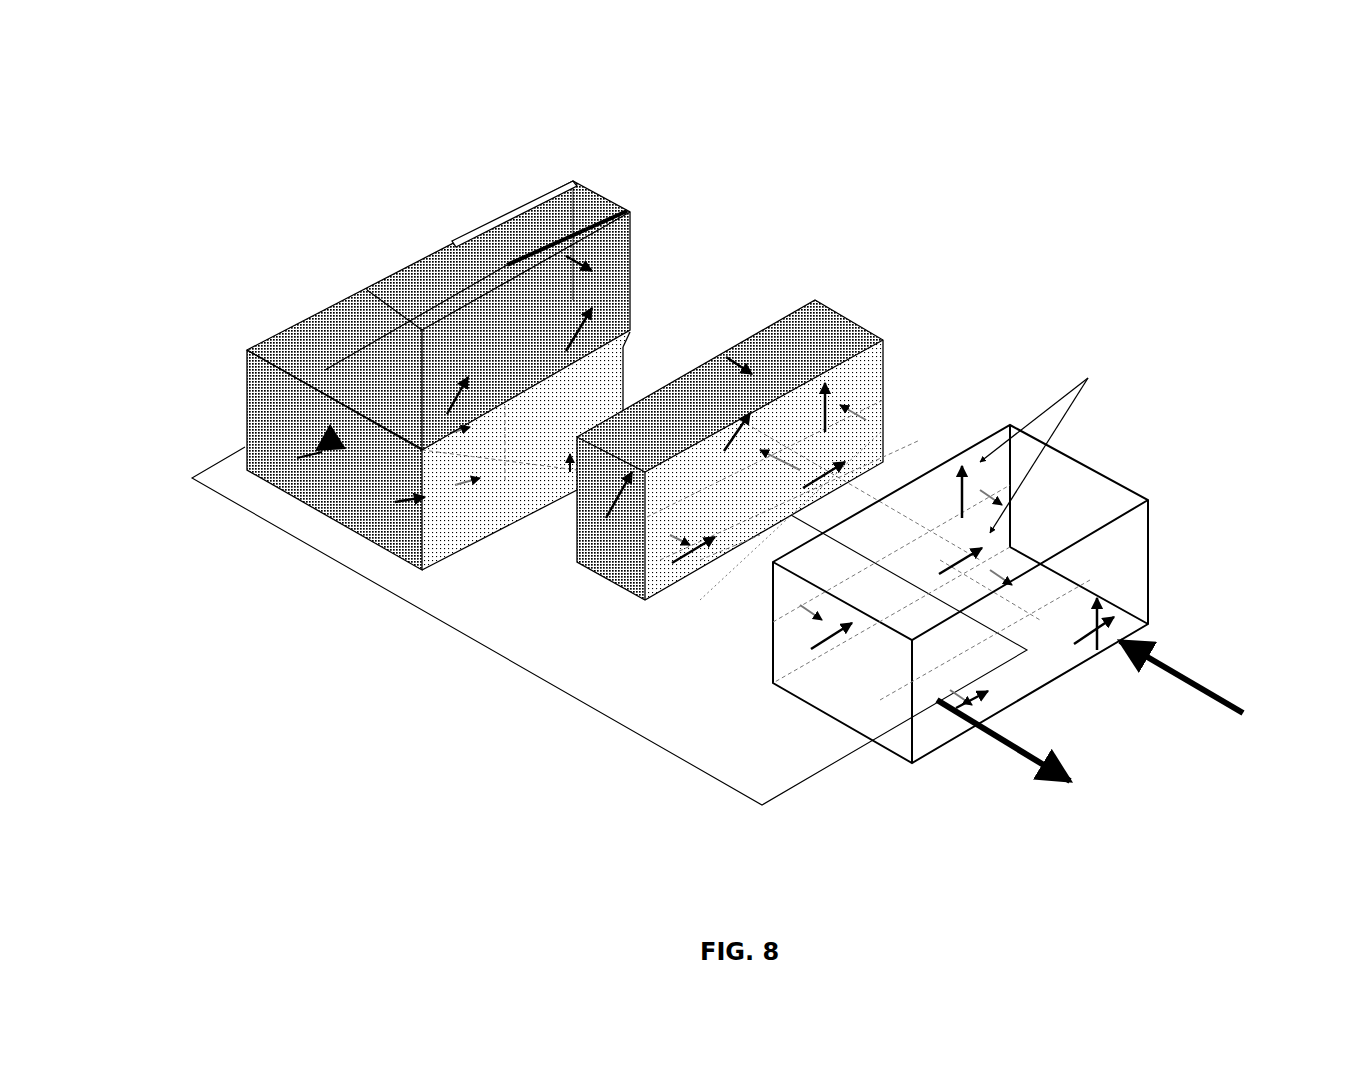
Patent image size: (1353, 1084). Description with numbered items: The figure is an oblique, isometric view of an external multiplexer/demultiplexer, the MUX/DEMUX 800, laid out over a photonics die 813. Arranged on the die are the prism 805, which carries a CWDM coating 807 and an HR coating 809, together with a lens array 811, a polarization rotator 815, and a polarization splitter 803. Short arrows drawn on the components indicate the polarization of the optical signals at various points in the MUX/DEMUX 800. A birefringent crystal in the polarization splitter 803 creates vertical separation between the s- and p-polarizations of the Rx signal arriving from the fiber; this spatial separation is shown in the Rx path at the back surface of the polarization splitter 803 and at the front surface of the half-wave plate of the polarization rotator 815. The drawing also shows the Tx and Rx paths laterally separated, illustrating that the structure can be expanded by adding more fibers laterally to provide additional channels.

The MUX/DEMUX 800 is at (192, 94).
The polarization splitter 803 is at (1127, 490).
The prism 805 is at (573, 178).
The CWDM coating 807 is at (598, 222).
The HR coating 809 is at (453, 242).
The lens array 811 is at (245, 403).
The photonics die 813 is at (742, 757).
The polarization rotator 815 is at (883, 340).